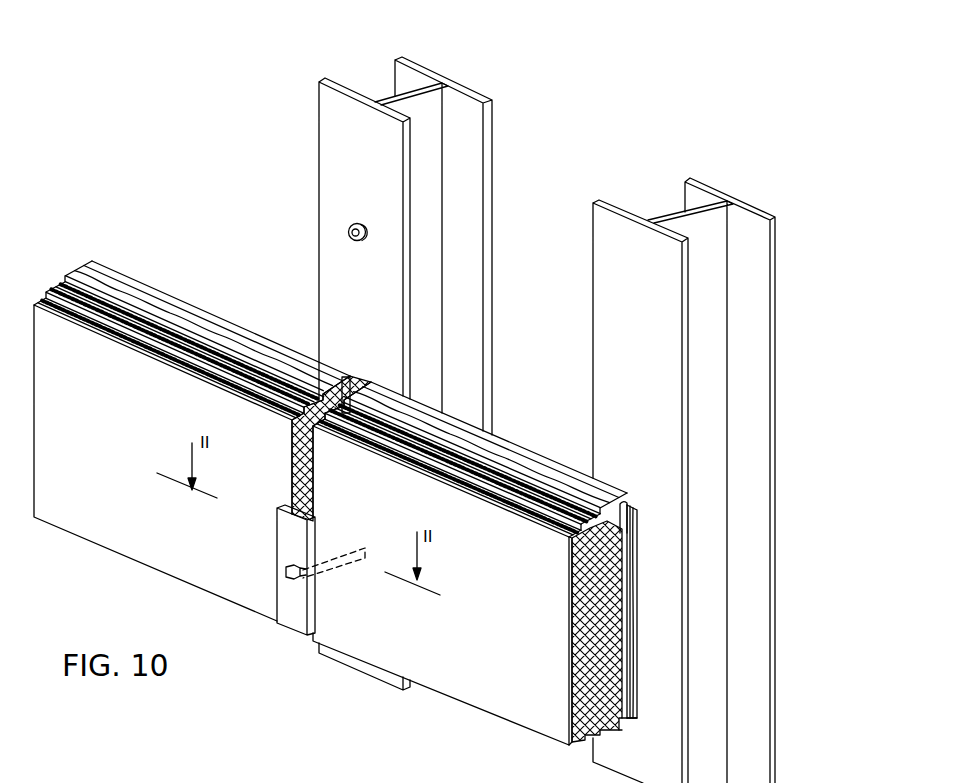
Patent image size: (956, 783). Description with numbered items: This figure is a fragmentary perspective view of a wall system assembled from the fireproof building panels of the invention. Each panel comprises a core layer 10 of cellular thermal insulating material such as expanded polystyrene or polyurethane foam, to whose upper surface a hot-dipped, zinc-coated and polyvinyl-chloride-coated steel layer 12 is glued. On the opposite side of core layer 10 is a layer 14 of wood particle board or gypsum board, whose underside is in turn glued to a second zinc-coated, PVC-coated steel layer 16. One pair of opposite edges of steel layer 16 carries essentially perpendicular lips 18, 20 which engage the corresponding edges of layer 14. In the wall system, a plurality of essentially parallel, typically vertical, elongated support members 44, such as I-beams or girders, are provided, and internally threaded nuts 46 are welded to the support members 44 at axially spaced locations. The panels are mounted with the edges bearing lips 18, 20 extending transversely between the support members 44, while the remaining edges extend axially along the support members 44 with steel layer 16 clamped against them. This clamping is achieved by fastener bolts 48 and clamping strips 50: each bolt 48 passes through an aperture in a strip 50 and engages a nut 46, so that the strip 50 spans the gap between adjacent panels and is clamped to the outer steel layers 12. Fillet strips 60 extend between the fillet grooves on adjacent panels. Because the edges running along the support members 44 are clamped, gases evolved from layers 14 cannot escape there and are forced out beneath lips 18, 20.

The core layer 10 is at (568, 604).
The steel layer 12 is at (568, 648).
The layer of wood particle board or gypsum board 14 is at (626, 651).
The steel layer 16 is at (632, 598).
The lip 18 is at (630, 723).
The lip 20 is at (628, 506).
The support member 44 is at (490, 176).
The nut 46 is at (367, 242).
The fastener bolt 48 is at (342, 564).
The clamping strip 50 is at (292, 622).
The fillet strip 60 is at (178, 322).